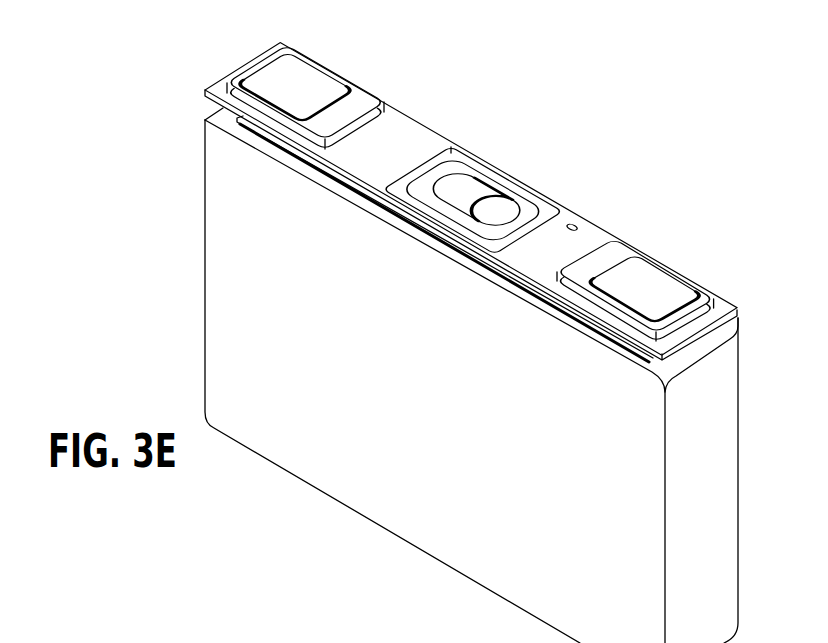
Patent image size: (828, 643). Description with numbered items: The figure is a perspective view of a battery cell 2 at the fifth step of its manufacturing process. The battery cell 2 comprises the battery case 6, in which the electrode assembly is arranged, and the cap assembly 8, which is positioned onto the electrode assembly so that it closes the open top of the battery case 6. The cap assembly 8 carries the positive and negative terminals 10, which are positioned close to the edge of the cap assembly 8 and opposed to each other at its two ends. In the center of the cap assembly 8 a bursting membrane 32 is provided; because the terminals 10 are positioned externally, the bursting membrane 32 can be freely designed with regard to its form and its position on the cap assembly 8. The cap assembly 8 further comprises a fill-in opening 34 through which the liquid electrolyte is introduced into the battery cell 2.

The battery cell 2 is at (145, 189).
The battery case 6 is at (233, 307).
The cap assembly 8 is at (407, 133).
The terminals 10 is at (307, 82).
The bursting membrane 32 is at (473, 203).
The fill-in opening 34 is at (572, 226).